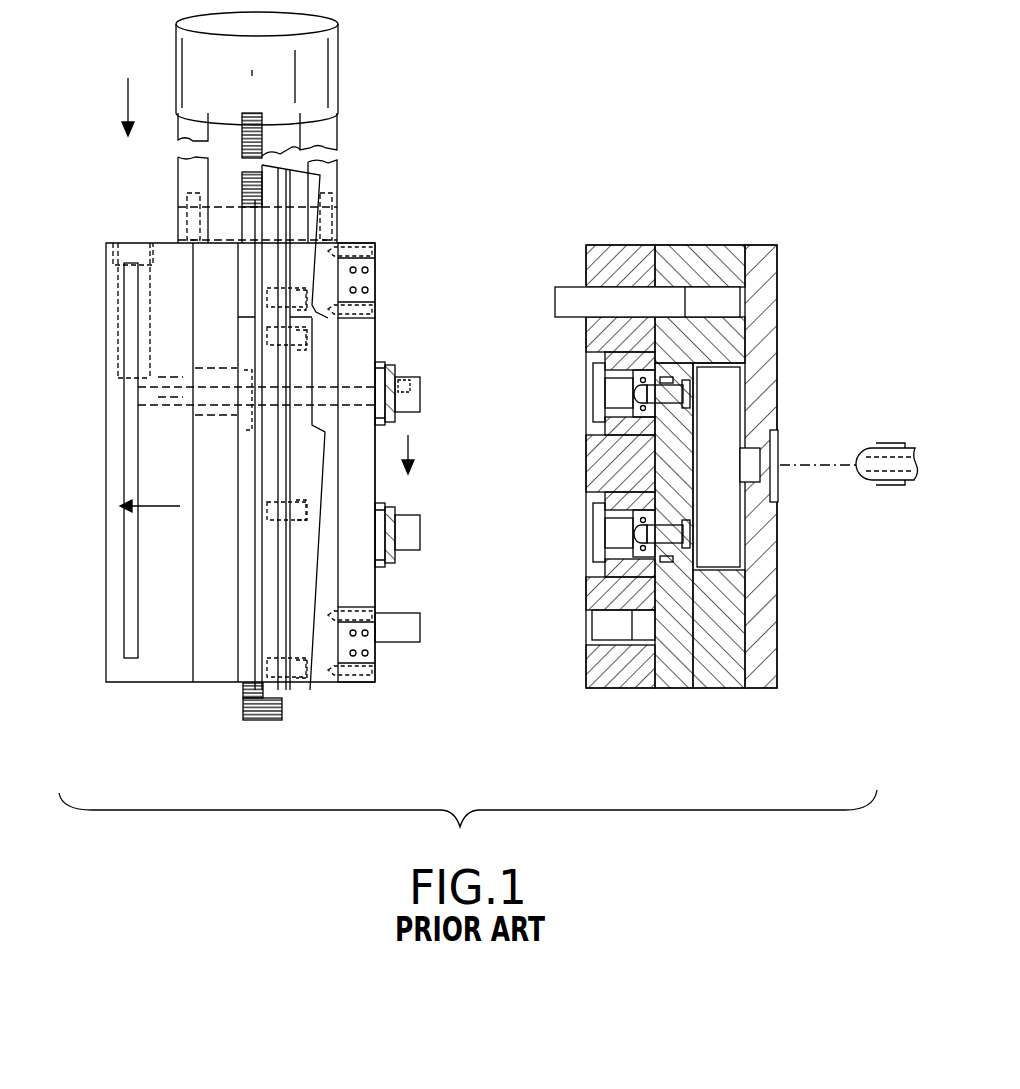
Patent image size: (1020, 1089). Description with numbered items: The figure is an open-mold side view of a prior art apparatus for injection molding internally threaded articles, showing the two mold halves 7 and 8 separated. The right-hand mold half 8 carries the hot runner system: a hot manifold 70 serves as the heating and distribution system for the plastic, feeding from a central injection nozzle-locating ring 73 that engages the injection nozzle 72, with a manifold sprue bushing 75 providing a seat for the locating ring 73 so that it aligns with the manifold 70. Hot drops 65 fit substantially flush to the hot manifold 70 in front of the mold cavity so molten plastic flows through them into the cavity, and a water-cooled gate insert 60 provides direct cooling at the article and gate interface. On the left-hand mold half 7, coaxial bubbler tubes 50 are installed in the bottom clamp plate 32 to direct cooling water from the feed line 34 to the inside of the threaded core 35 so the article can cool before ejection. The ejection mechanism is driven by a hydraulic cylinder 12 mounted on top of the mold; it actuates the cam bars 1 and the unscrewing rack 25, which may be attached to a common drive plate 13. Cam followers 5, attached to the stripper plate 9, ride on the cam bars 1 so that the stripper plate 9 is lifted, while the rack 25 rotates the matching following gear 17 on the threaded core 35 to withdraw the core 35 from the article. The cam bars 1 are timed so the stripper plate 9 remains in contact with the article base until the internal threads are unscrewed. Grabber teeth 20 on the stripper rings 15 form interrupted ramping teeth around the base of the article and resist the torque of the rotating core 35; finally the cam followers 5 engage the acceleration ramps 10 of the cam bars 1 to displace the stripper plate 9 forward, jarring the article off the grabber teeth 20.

The cam bars 1 is at (312, 213).
The cam followers 5 is at (360, 242).
The mold half 7 is at (106, 270).
The mold half 8 is at (694, 247).
The stripper plate 9 is at (355, 330).
The acceleration ramps 10 is at (330, 420).
The hydraulic cylinder 12 is at (322, 66).
The common drive plate 13 is at (207, 220).
The stripper rings 15 is at (395, 422).
The following gear 17 is at (248, 430).
The grabber teeth 20 is at (393, 558).
The unscrewing rack 25 is at (268, 722).
The bottom clamp plate 32 is at (106, 480).
The feed line 34 is at (125, 318).
The threaded core 35 is at (302, 372).
The coaxial bubbler tubes 50 is at (128, 391).
The water-cooled gate insert 60 is at (657, 572).
The hot drops 65 is at (670, 536).
The hot manifold 70 is at (728, 399).
The injection nozzle 72 is at (880, 448).
The injection nozzle-locating ring 73 is at (770, 478).
The manifold sprue bushing 75 is at (757, 462).